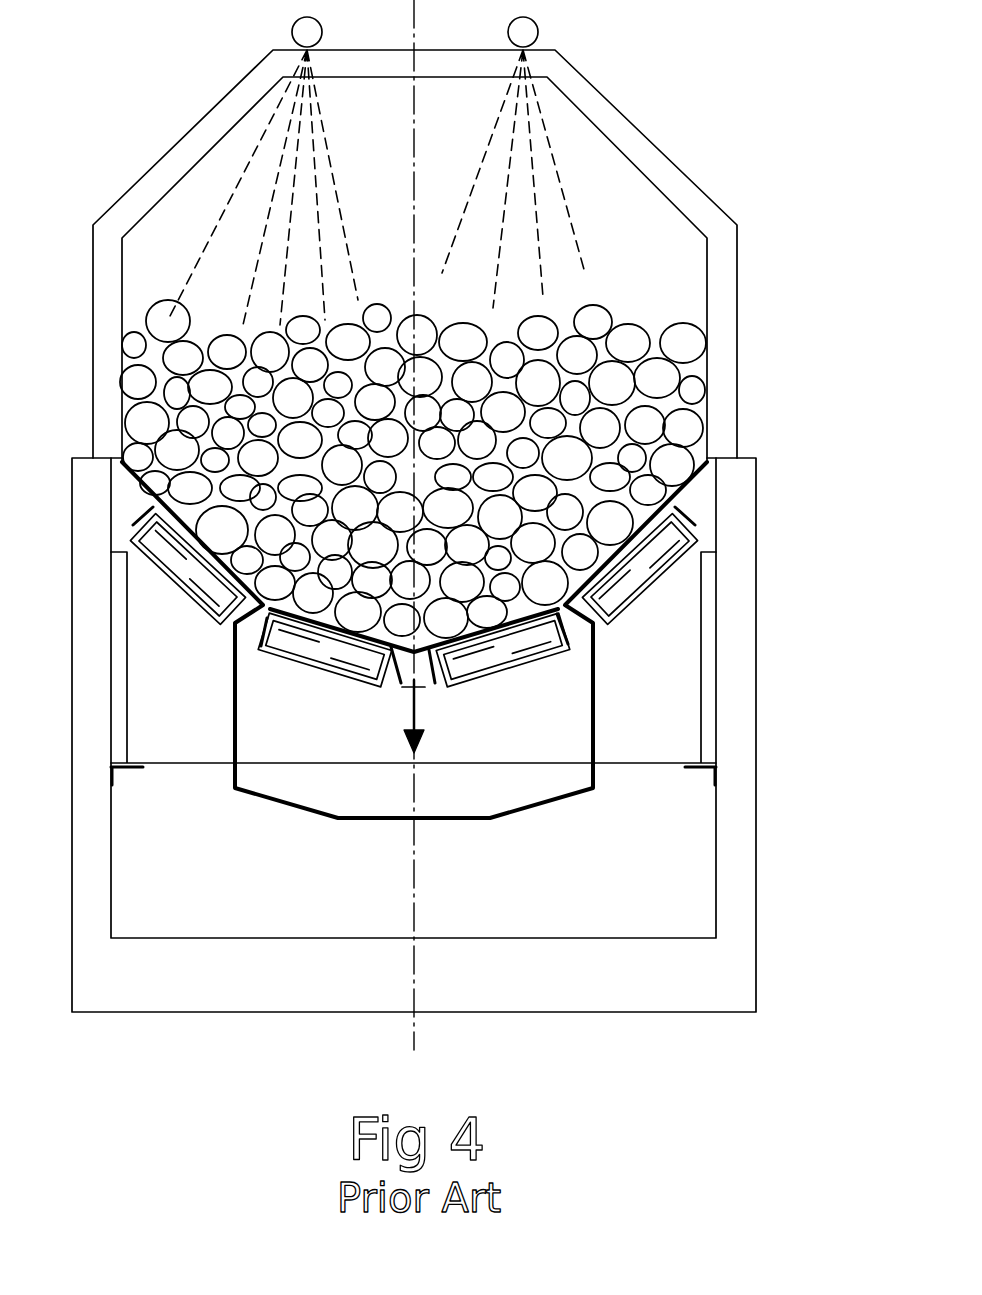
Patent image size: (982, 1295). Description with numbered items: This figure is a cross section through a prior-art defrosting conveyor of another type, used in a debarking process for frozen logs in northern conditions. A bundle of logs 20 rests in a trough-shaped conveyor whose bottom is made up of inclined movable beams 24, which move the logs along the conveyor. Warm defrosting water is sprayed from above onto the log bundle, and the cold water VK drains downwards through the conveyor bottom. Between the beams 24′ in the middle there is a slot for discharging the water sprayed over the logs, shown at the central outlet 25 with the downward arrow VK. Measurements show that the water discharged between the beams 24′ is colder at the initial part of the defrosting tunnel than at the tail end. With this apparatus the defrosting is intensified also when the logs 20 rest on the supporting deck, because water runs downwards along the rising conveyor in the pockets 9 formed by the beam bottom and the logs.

The logs 20 is at (490, 440).
The movable beams 24 is at (670, 497).
The pockets 9 is at (652, 588).
The beams in the middle 24′ is at (497, 650).
The discharge gap 25 is at (402, 688).